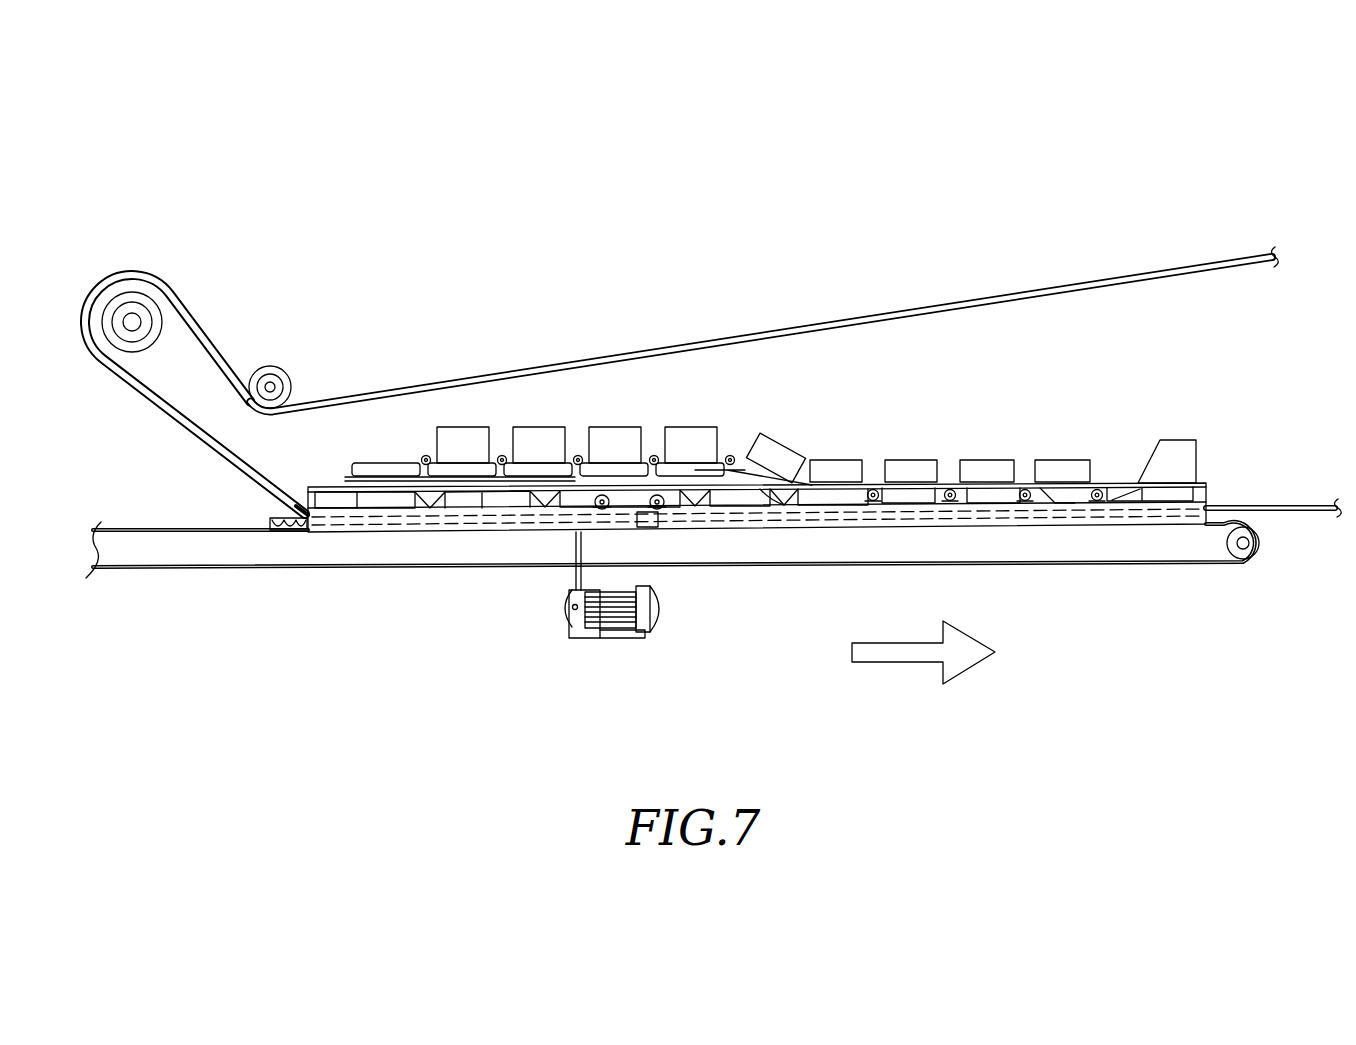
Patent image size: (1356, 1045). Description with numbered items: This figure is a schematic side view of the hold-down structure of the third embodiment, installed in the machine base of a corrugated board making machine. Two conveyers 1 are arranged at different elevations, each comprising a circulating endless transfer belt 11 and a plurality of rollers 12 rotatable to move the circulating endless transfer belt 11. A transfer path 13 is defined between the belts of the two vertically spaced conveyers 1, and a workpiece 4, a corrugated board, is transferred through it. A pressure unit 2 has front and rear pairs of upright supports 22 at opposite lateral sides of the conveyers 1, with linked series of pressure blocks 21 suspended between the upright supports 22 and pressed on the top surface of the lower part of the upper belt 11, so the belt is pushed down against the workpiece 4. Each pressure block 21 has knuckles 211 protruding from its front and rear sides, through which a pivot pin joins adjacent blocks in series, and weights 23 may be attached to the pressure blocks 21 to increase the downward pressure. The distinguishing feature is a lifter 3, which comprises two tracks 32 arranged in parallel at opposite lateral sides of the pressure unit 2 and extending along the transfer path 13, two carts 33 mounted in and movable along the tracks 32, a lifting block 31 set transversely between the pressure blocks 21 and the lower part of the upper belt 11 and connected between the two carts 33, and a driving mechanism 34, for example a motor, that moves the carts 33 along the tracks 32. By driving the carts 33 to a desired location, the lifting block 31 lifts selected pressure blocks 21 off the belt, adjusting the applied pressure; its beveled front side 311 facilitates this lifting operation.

The conveyer 1 is at (192, 262).
The circulating endless transfer belt 11 is at (150, 274).
The roller 12 is at (117, 312).
The transfer path 13 is at (268, 507).
The pressure unit 2 is at (1005, 436).
The pressure block 21 is at (1058, 495).
The knuckle 211 is at (950, 489).
The upright support 22 is at (1172, 447).
The weight 23 is at (835, 465).
The lifter 3 is at (852, 527).
The lifting block 31 is at (737, 498).
The beveled front side 311 is at (776, 492).
The track 32 is at (930, 517).
The cart 33 is at (627, 498).
The driving mechanism 34 is at (562, 606).
The workpiece 4 is at (288, 527).